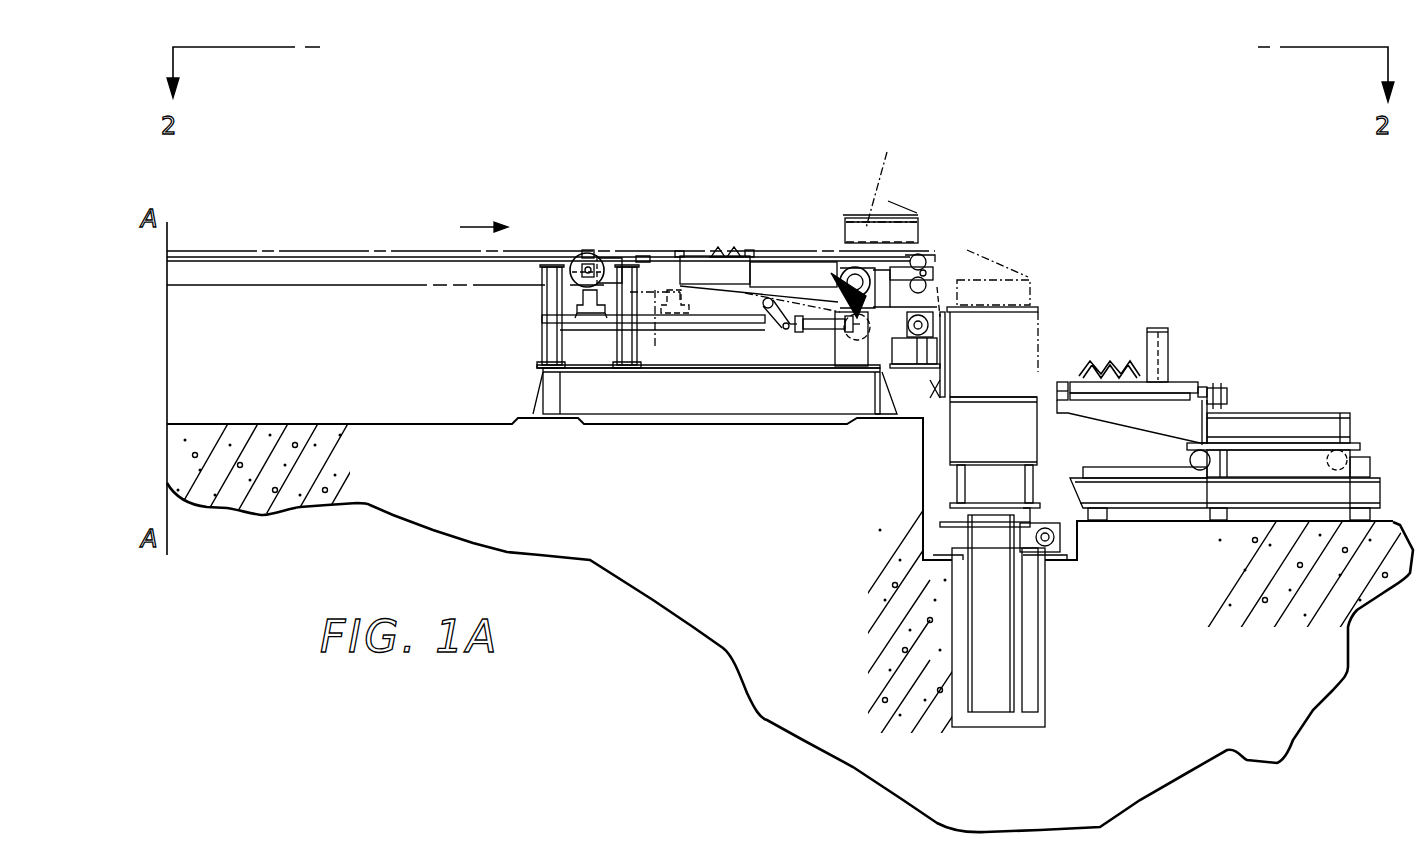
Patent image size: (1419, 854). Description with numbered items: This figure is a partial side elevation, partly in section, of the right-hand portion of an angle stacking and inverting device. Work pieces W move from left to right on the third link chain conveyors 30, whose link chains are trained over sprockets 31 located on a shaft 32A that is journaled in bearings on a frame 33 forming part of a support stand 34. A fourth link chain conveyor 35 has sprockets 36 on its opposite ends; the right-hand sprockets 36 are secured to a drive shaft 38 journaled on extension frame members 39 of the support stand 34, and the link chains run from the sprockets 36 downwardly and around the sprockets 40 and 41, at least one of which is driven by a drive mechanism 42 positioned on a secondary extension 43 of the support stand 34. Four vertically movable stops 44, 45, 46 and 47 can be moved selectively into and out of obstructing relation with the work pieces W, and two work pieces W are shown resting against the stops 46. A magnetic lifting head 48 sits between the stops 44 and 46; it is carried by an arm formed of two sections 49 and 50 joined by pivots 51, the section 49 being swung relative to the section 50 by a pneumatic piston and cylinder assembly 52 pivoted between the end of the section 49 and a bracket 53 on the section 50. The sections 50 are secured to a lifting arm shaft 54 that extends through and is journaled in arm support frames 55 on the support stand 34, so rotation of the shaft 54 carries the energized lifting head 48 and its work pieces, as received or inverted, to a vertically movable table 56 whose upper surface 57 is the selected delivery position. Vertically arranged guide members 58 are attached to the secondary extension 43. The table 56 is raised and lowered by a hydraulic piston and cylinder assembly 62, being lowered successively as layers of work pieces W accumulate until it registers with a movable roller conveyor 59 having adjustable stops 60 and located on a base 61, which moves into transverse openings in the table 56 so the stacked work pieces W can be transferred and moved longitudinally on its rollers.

The third link chain conveyors 30 is at (365, 270).
The sprockets 31 is at (582, 280).
The shaft 32A is at (582, 262).
The frame 33 is at (606, 262).
The support stand 34 is at (625, 347).
The fourth link chain conveyor 35 is at (648, 256).
The sprockets 36 is at (640, 250).
The drive shaft 38 is at (940, 276).
The extension frame members 39 is at (968, 258).
The sprocket 40 is at (912, 322).
The sprocket 41 is at (848, 332).
The drive mechanism 42 is at (937, 333).
The secondary extension 43 is at (905, 360).
The vertically movable stop 44 is at (593, 250).
The vertically movable stop 45 is at (683, 254).
The vertically movable stop 46 is at (750, 252).
The vertically movable stop 47 is at (924, 262).
The magnetic lifting head 48 is at (876, 212).
The arm section 49 is at (728, 338).
The arm section 50 is at (795, 331).
The pivots 51 is at (768, 330).
The pneumatic piston and cylinder assembly 52 is at (820, 327).
The bracket 53 is at (838, 290).
The lifting arm shaft 54 is at (857, 316).
The arm support frame 55 is at (548, 342).
The vertically movable table 56 is at (990, 462).
The upper surface 57 is at (978, 398).
The guide members 58 is at (930, 398).
The movable roller conveyor 59 is at (1182, 385).
The adjustable stops 60 is at (1170, 350).
The base 61 is at (1225, 466).
The hydraulic piston and cylinder assembly 62 is at (1003, 640).
The work pieces W is at (730, 248).